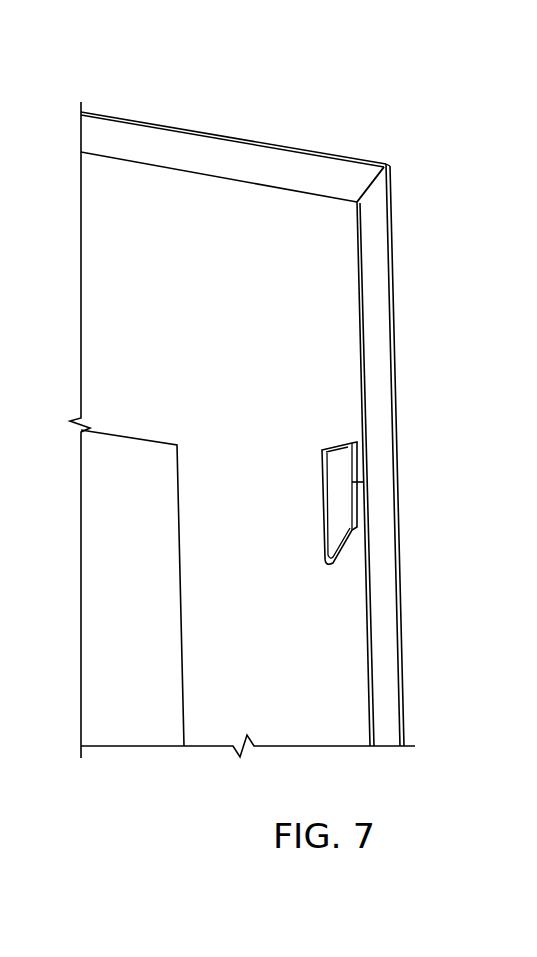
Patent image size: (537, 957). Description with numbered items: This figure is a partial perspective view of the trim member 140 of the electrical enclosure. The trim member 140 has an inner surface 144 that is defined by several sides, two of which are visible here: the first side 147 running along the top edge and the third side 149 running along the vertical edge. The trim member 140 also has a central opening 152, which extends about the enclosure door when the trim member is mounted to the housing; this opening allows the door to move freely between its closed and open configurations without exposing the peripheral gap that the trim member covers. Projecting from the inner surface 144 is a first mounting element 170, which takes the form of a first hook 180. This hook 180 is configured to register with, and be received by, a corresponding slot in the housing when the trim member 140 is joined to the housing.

The trim member 140 is at (424, 382).
The inner surface 144 is at (280, 242).
The first side 147 is at (238, 136).
The third side 149 is at (400, 626).
The central opening 152 is at (183, 647).
The first mounting element 170 is at (309, 508).
The first hook 180 is at (322, 458).